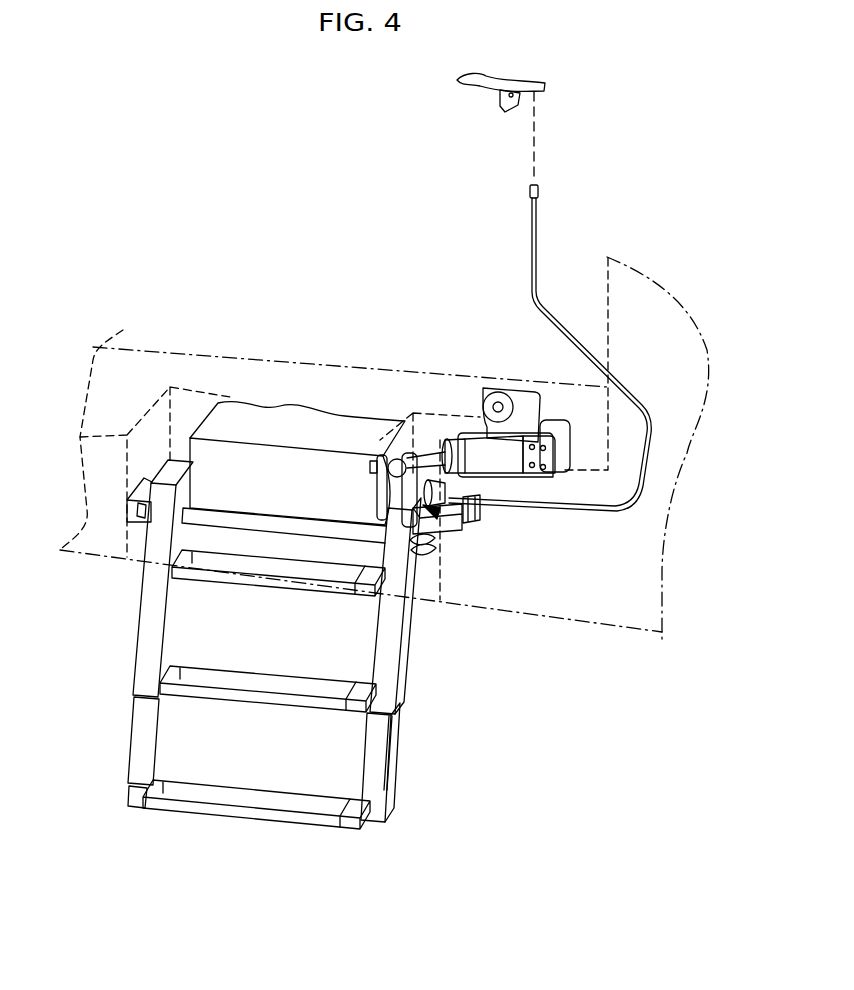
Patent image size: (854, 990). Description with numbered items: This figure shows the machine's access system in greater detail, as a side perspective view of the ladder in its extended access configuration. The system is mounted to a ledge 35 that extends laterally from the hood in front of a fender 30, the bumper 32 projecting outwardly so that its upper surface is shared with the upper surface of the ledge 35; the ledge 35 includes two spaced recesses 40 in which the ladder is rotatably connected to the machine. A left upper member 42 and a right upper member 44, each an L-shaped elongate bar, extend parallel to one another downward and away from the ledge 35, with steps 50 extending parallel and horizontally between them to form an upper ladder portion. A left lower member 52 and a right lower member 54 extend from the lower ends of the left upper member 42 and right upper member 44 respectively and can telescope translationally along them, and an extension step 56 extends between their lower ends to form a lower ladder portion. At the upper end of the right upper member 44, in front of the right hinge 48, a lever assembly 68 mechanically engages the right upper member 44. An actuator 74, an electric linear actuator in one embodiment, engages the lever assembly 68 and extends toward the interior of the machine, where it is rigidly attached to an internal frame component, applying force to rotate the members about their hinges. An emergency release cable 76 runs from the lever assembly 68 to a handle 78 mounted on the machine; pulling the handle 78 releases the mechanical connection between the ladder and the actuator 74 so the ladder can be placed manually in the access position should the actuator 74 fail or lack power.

The fender 30 is at (673, 460).
The bumper 32 is at (294, 490).
The ledge 35 is at (192, 367).
The recess 40 is at (132, 573).
The left upper member 42 is at (141, 643).
The right upper member 44 is at (407, 670).
The right hinge 48 is at (447, 496).
The step 50 is at (297, 685).
The left lower member 52 is at (137, 740).
The right lower member 54 is at (380, 762).
The extension step 56 is at (253, 797).
The lever assembly 68 is at (450, 522).
The actuator 74 is at (444, 455).
The emergency release cable 76 is at (603, 372).
The handle 78 is at (466, 84).